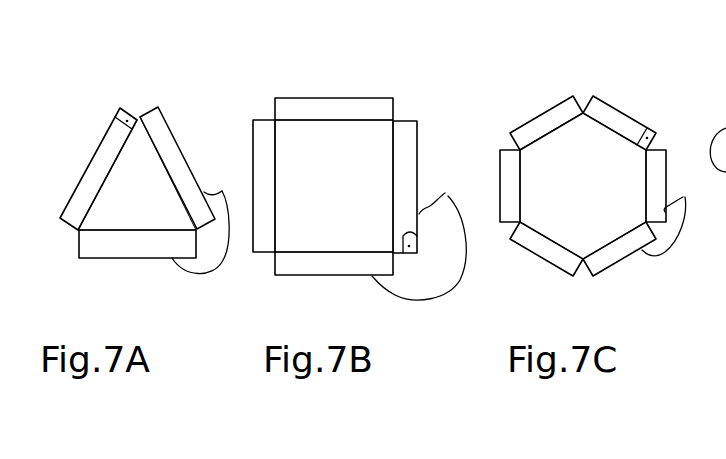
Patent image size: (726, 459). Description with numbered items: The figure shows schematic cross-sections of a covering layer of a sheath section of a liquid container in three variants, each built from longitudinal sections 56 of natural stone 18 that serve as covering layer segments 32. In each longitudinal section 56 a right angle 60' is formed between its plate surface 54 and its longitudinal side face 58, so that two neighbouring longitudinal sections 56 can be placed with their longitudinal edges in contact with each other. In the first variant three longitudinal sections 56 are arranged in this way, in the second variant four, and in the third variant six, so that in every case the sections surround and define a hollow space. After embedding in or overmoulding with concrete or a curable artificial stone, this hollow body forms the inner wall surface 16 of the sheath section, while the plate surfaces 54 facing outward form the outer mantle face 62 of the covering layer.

In FIG. 7A, the inner wall surface 16 is at (157, 162).
In FIG. 7B, the inner wall surface 16 is at (327, 121).
In FIG. 7C, the inner wall surface 16 is at (535, 136).
In FIG. 7A, the natural stone 18 is at (118, 252).
In FIG. 7B, the natural stone 18 is at (315, 117).
In FIG. 7C, the natural stone 18 is at (583, 186).
In FIG. 7A, the covering layer segment 32 is at (98, 258).
In FIG. 7B, the covering layer segment 32 is at (425, 100).
In FIG. 7C, the covering layer segment 32 is at (502, 167).
In FIG. 7A, the longitudinal section 56 is at (91, 195).
In FIG. 7B, the longitudinal section 56 is at (371, 74).
In FIG. 7C, the longitudinal section 56 is at (527, 119).
In FIG. 7A, the plate surface 54 is at (170, 131).
In FIG. 7B, the plate surface 54 is at (417, 168).
In FIG. 7C, the plate surface 54 is at (605, 93).
In FIG. 7A, the longitudinal side face 58 is at (148, 112).
In FIG. 7B, the longitudinal side face 58 is at (432, 100).
In FIG. 7C, the longitudinal side face 58 is at (583, 112).
In FIG. 7A, the right angle 60' is at (114, 94).
In FIG. 7B, the right angle 60' is at (429, 237).
In FIG. 7C, the right angle 60' is at (652, 114).
In FIG. 7A, the outer mantle face 62 is at (204, 221).
In FIG. 7B, the outer mantle face 62 is at (419, 236).
In FIG. 7C, the outer mantle face 62 is at (670, 217).